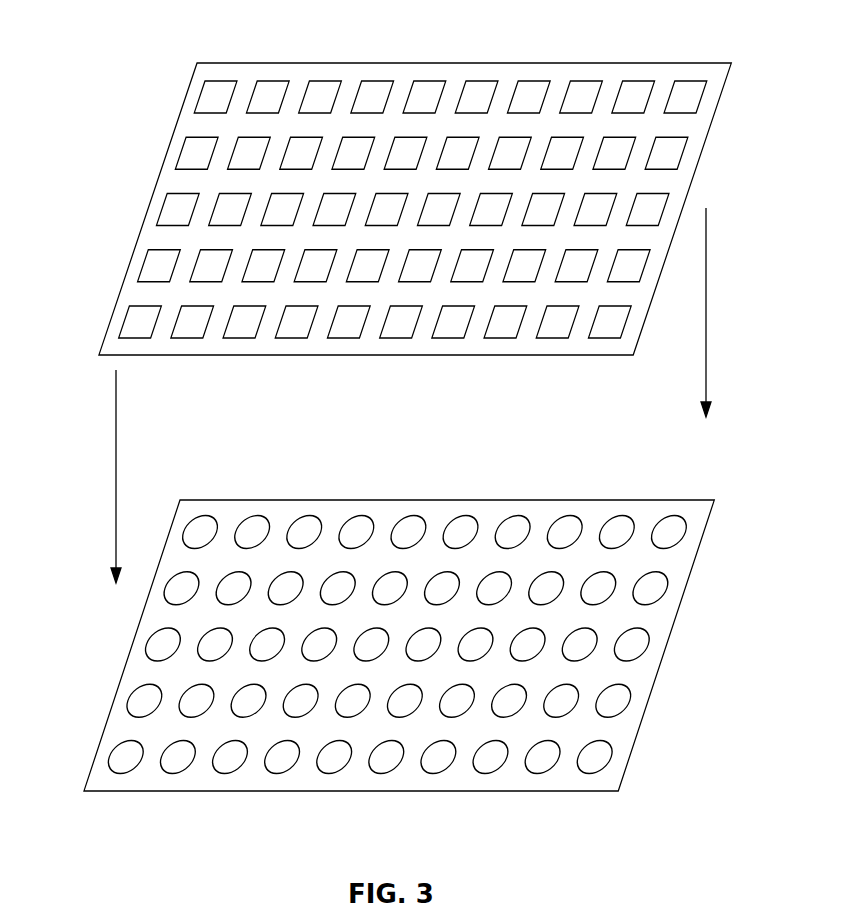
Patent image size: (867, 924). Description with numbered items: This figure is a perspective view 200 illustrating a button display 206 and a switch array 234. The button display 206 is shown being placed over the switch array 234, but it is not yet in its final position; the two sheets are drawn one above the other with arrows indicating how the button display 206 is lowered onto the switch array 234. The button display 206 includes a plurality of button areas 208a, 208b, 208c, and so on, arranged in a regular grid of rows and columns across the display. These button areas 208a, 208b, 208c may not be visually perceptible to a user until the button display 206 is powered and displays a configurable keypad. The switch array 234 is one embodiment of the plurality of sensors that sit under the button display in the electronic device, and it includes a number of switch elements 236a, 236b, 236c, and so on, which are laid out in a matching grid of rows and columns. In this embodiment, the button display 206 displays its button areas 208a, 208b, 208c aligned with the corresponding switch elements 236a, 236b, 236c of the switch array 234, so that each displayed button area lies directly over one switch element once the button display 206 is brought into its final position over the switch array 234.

The perspective view 200 is at (415, 406).
The button display 206 is at (447, 188).
The button area 208a is at (227, 78).
The button area 208b is at (280, 78).
The button area 208c is at (333, 78).
The switch array 234 is at (444, 626).
The switch element 236a is at (203, 514).
The switch element 236b is at (262, 514).
The switch element 236c is at (313, 514).